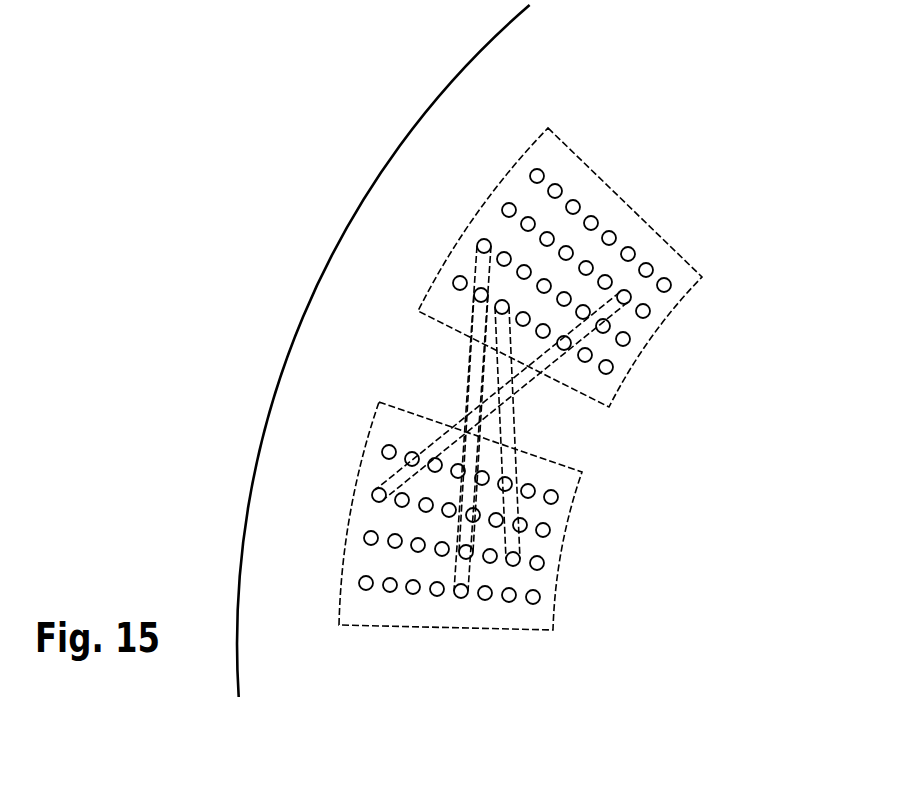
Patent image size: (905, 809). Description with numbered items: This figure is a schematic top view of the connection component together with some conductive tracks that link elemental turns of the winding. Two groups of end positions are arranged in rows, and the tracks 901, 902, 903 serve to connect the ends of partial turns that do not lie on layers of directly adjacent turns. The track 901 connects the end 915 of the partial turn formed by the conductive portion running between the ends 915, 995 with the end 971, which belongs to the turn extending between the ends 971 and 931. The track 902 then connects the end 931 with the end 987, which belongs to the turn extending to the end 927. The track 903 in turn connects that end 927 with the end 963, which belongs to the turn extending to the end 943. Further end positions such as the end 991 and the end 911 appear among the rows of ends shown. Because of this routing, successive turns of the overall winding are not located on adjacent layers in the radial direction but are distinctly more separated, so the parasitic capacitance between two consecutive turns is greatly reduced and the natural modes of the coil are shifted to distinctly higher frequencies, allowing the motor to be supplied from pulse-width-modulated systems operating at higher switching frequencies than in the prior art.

The conductor slot position 991 is at (535, 170).
The end of turn 971 is at (483, 243).
The end of turn 963 is at (498, 307).
The track 901 is at (472, 375).
The end of turn 943 is at (433, 463).
The end of turn 931 is at (372, 495).
The end of partial turn 995 is at (608, 237).
The end of turn 987 is at (622, 295).
The track 902 is at (523, 377).
The track 903 is at (510, 424).
The end of turn 927 is at (513, 565).
The conductor slot position 911 is at (366, 590).
The end of partial turn 915 is at (461, 598).